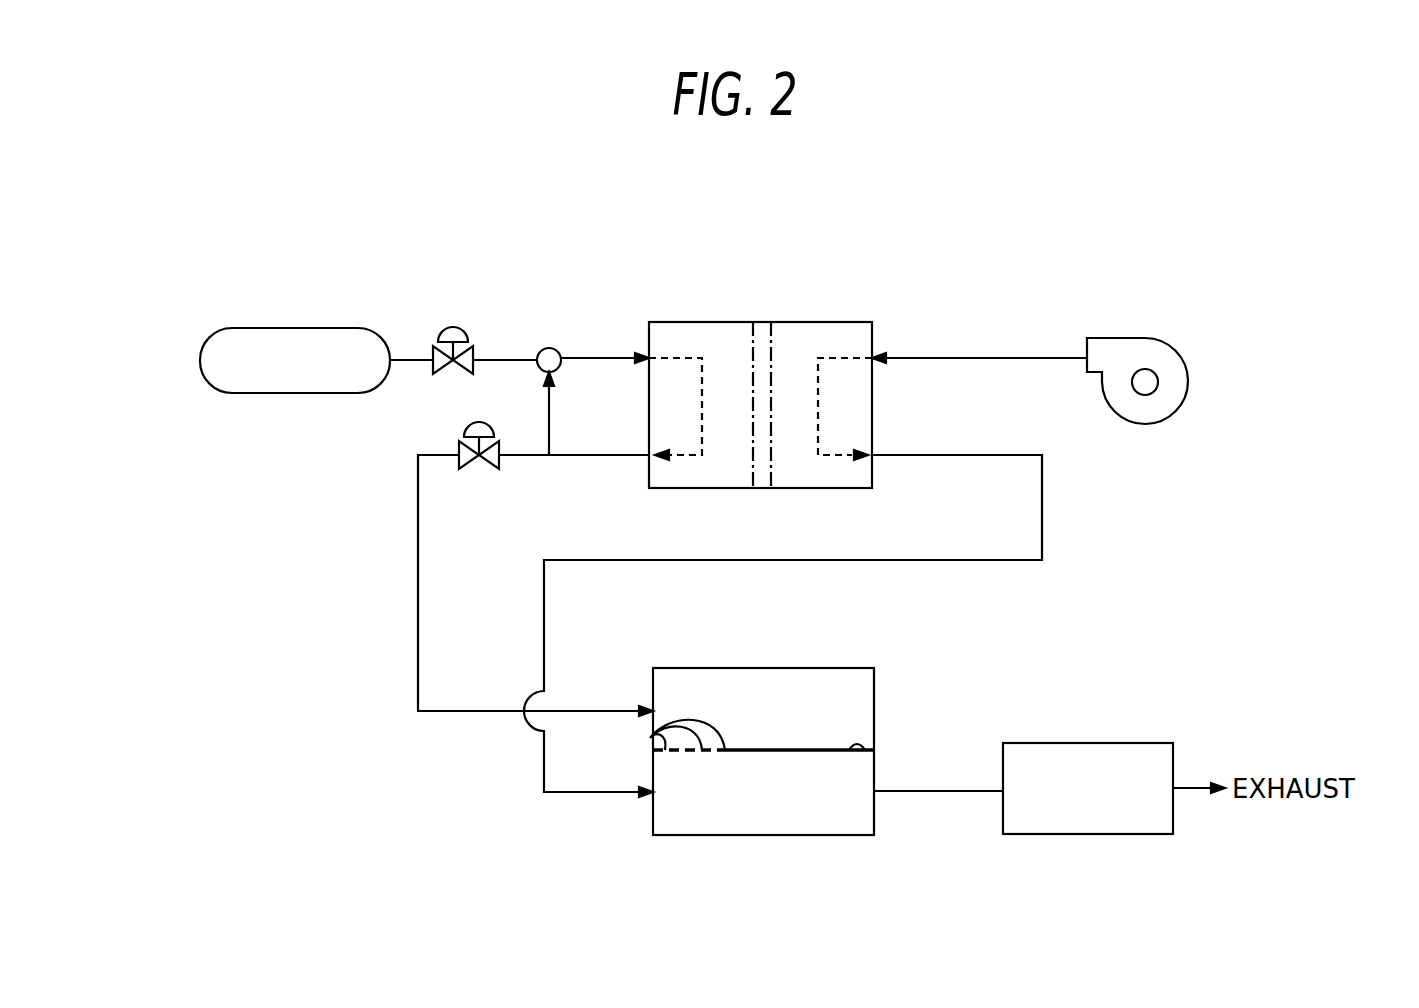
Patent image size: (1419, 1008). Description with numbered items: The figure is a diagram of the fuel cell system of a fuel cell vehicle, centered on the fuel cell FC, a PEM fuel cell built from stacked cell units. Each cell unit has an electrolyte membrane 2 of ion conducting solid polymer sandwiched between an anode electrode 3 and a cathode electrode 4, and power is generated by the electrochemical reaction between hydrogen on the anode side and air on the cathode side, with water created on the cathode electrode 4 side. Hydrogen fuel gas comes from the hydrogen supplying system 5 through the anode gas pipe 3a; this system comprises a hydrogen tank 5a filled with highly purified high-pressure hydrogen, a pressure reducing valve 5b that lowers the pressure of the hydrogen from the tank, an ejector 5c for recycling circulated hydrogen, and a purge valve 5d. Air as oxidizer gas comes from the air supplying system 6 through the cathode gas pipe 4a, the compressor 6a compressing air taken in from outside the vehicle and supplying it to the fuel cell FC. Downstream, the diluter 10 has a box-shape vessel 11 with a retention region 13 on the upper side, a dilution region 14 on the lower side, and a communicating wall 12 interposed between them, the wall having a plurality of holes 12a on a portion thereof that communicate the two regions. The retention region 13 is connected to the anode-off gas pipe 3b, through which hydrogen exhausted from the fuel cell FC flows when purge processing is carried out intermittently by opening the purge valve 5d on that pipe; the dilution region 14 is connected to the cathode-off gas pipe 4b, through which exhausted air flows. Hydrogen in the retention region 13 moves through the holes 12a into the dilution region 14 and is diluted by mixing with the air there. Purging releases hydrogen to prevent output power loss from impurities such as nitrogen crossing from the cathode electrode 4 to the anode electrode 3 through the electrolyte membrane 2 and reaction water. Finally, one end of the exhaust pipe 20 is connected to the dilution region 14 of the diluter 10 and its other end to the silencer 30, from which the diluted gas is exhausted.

The fuel cell FC is at (855, 318).
The electrolyte membrane 2 is at (760, 338).
The anode electrode 3 is at (698, 338).
The anode gas pipe 3a is at (503, 355).
The anode-off gas pipe 3b is at (418, 578).
The cathode electrode 4 is at (818, 338).
The cathode gas pipe 4a is at (986, 353).
The cathode-off gas pipe 4b is at (1042, 500).
The hydrogen supplying system 5 is at (390, 318).
The hydrogen tank 5a is at (288, 328).
The pressure reducing valve 5b is at (445, 337).
The ejector 5c is at (549, 348).
The purge valve 5d is at (459, 447).
The air supplying system 6 is at (1025, 343).
The compressor 6a is at (1150, 340).
The diluter 10 is at (760, 663).
The box-shape vessel 11 is at (697, 835).
The communicating wall 12 is at (872, 748).
The holes 12a is at (650, 741).
The retention region 13 is at (852, 697).
The dilution region 14 is at (815, 810).
The exhaust pipe 20 is at (940, 800).
The silencer 30 is at (1087, 760).